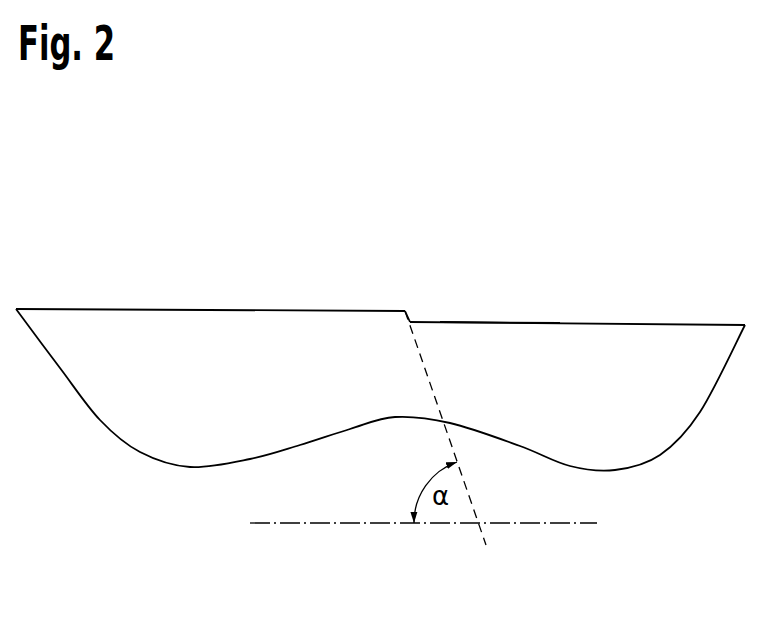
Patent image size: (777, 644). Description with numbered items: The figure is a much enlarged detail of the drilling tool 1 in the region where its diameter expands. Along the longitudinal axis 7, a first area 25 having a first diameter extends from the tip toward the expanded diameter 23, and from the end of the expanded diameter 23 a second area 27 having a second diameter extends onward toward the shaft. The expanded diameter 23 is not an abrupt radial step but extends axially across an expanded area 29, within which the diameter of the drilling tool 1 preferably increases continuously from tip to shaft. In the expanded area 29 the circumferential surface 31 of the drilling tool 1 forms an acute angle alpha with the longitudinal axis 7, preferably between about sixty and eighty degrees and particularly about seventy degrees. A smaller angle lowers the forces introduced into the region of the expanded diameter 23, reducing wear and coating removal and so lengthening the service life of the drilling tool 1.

The drilling tool 1 is at (538, 166).
The longitudinal axis 7 is at (560, 527).
The expanded diameter 23 is at (420, 297).
The first area 25 is at (557, 300).
The second area 27 is at (300, 297).
The expanded area 29 is at (398, 329).
The circumferential surface 31 is at (497, 322).